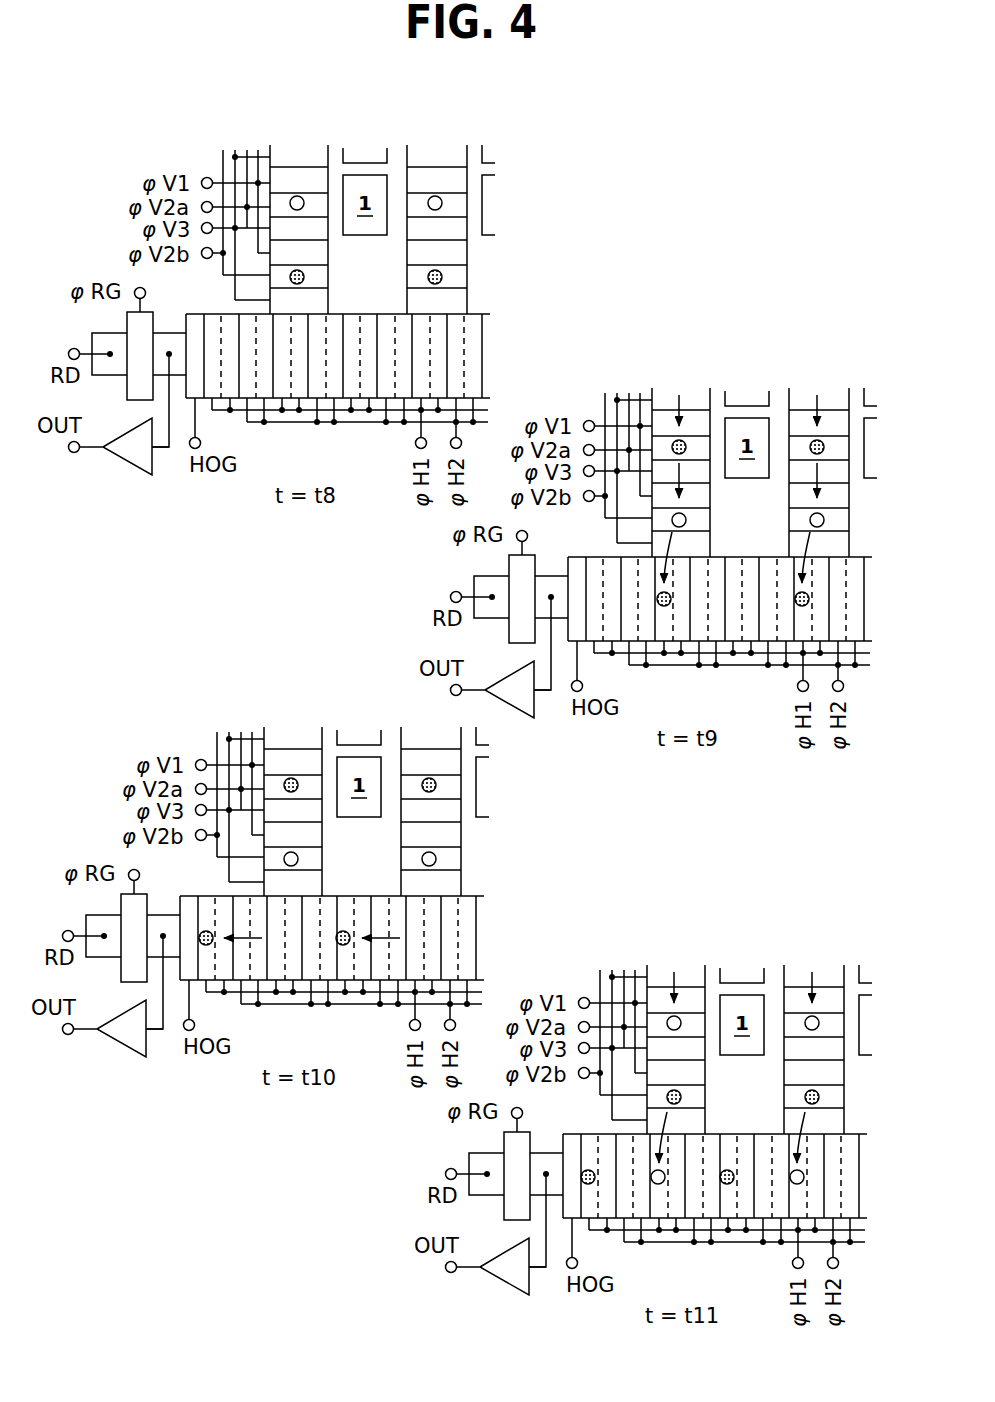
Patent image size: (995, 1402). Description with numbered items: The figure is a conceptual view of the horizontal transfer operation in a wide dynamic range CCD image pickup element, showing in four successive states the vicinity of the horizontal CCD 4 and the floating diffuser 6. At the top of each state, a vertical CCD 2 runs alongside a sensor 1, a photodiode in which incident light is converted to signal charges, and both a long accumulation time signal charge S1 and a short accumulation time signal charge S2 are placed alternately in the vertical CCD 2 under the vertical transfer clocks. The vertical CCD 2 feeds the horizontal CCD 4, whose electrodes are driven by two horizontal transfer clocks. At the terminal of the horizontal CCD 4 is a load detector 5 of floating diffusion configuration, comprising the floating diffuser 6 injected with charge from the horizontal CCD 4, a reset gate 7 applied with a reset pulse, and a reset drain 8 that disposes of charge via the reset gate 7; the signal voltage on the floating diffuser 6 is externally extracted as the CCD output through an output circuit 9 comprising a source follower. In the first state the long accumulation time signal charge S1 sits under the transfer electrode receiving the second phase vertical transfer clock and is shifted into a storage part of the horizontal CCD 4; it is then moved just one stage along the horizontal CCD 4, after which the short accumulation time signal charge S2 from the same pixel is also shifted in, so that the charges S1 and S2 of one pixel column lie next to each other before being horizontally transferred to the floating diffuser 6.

The sensor 1 is at (553, 601).
The vertical CCD 2 is at (302, 172).
The horizontal CCD 4 is at (543, 820).
The load detector 5 is at (299, 751).
The floating diffuser 6 is at (357, 774).
The reset gate 7 is at (308, 773).
The reset drain 8 is at (276, 758).
The output circuit 9 is at (291, 866).
The long accumulation time signal charge S1 is at (444, 276).
The short accumulation time signal charge S2 is at (444, 202).